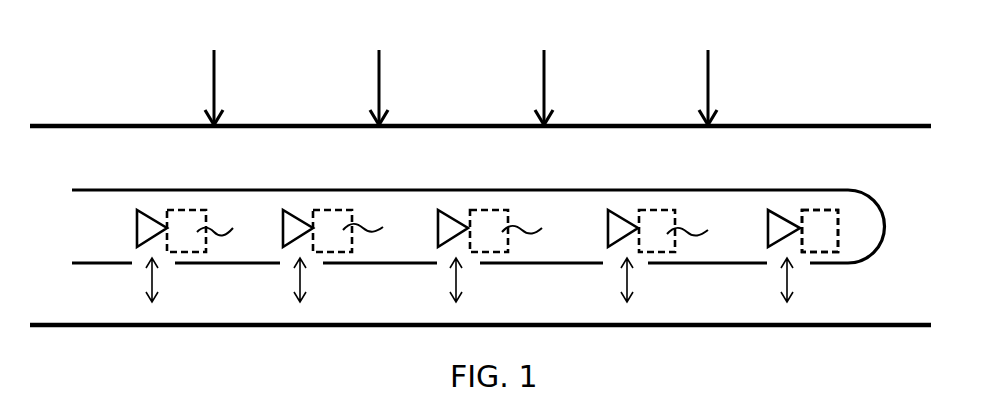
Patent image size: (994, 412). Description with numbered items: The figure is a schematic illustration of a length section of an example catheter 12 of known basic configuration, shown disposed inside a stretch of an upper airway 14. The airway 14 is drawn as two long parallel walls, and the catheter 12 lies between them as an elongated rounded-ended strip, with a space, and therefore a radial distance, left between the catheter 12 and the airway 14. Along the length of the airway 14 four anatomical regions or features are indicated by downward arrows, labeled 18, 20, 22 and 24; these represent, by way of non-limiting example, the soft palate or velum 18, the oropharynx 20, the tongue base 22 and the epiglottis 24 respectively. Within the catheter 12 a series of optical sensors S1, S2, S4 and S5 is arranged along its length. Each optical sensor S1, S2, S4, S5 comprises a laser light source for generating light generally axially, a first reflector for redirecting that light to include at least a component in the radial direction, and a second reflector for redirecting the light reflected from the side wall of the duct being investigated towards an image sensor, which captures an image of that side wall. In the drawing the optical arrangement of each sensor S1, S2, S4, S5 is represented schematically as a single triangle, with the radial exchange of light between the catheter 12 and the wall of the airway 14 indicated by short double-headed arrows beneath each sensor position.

The catheter 12 is at (858, 217).
The upper airway 14 is at (816, 124).
The soft palate (velum) 18 is at (213, 77).
The oropharynx 20 is at (378, 77).
The tongue base 22 is at (544, 77).
The epiglottis 24 is at (708, 77).
The optical sensor S1 is at (230, 221).
The optical sensor S2 is at (457, 221).
The optical sensor S4 is at (701, 229).
The optical sensor S5 is at (805, 210).